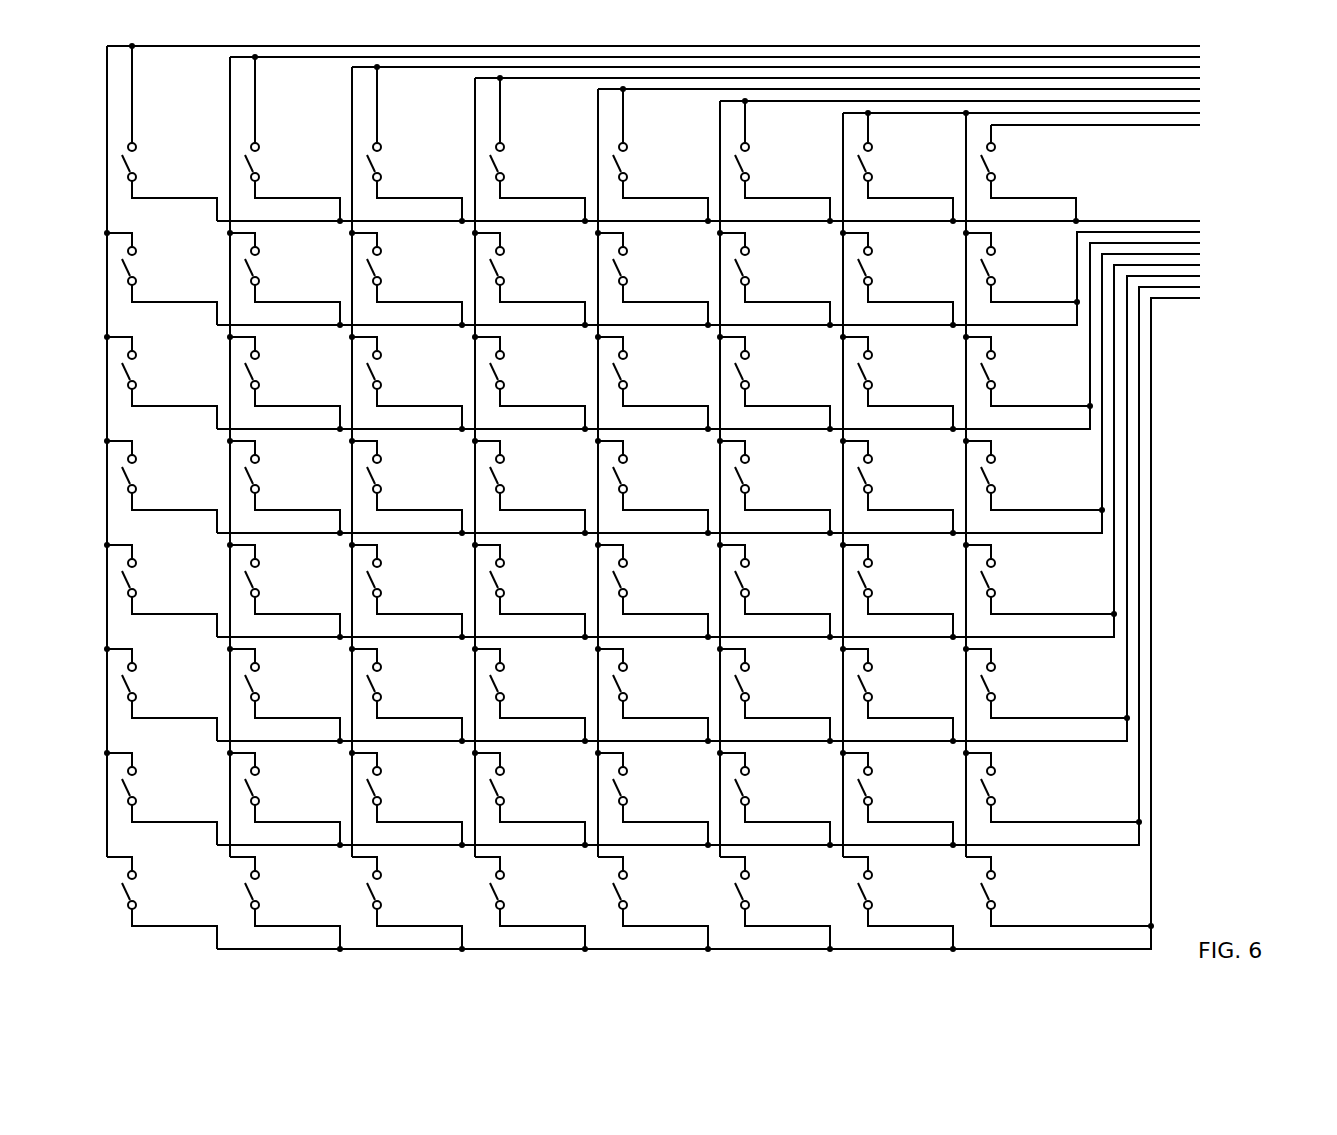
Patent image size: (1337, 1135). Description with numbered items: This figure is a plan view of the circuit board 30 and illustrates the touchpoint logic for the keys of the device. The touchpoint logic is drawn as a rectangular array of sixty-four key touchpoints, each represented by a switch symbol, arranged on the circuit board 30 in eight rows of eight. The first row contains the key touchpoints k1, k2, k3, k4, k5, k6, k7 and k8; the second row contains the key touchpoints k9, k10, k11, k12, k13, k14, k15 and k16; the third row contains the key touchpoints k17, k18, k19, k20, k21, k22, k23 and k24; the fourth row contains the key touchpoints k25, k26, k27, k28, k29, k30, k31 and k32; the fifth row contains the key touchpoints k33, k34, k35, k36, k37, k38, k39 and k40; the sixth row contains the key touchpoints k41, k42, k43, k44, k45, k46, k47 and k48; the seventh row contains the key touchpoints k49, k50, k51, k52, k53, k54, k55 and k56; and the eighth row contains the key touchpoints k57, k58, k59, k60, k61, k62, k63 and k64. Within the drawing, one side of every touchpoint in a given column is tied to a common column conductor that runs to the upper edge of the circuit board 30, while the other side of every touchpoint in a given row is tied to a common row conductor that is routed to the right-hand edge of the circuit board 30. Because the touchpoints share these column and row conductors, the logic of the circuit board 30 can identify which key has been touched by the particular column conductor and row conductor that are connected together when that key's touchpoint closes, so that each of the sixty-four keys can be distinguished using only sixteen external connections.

The circuit board 30 is at (719, 497).
The key switch k1 is at (144, 162).
The key switch k2 is at (267, 162).
The key switch k3 is at (389, 162).
The key switch k4 is at (512, 162).
The key switch k5 is at (635, 162).
The key switch k6 is at (757, 162).
The key switch k7 is at (880, 162).
The key switch k8 is at (1003, 162).
The key switch k9 is at (144, 266).
The key switch k10 is at (272, 266).
The key switch k11 is at (394, 266).
The key switch k12 is at (517, 266).
The key switch k13 is at (640, 266).
The key switch k14 is at (762, 266).
The key switch k15 is at (885, 266).
The key switch k16 is at (1008, 266).
The key switch k17 is at (149, 370).
The key switch k18 is at (272, 370).
The key switch k19 is at (394, 370).
The key switch k20 is at (517, 370).
The key switch k21 is at (640, 370).
The key switch k22 is at (762, 370).
The key switch k23 is at (885, 370).
The key switch k24 is at (1008, 370).
The key switch k25 is at (149, 474).
The key switch k26 is at (272, 474).
The key switch k27 is at (394, 474).
The key switch k28 is at (517, 474).
The key switch k29 is at (640, 474).
The key switch k30 is at (762, 474).
The key switch k31 is at (885, 474).
The key switch k32 is at (1008, 474).
The key switch k33 is at (149, 578).
The key switch k34 is at (272, 578).
The key switch k35 is at (394, 578).
The key switch k36 is at (517, 578).
The key switch k37 is at (640, 578).
The key switch k38 is at (762, 578).
The key switch k39 is at (885, 578).
The key switch k40 is at (1008, 578).
The key switch k41 is at (149, 682).
The key switch k42 is at (272, 682).
The key switch k43 is at (394, 682).
The key switch k44 is at (517, 682).
The key switch k45 is at (640, 682).
The key switch k46 is at (762, 682).
The key switch k47 is at (885, 682).
The key switch k48 is at (1008, 682).
The key switch k49 is at (149, 786).
The key switch k50 is at (272, 786).
The key switch k51 is at (394, 786).
The key switch k52 is at (517, 786).
The key switch k53 is at (640, 786).
The key switch k54 is at (762, 786).
The key switch k55 is at (885, 786).
The key switch k56 is at (1008, 786).
The key switch k57 is at (149, 890).
The key switch k58 is at (272, 890).
The key switch k59 is at (394, 890).
The key switch k60 is at (517, 890).
The key switch k61 is at (640, 890).
The key switch k62 is at (762, 890).
The key switch k63 is at (885, 890).
The key switch k64 is at (1008, 890).